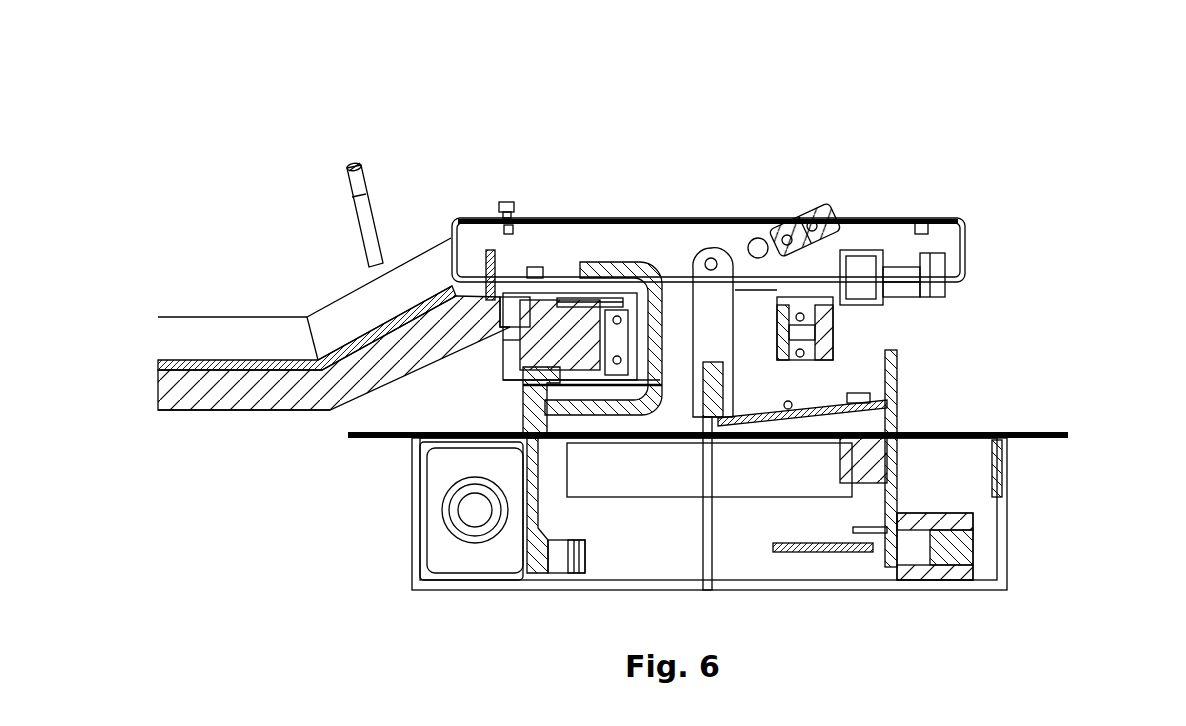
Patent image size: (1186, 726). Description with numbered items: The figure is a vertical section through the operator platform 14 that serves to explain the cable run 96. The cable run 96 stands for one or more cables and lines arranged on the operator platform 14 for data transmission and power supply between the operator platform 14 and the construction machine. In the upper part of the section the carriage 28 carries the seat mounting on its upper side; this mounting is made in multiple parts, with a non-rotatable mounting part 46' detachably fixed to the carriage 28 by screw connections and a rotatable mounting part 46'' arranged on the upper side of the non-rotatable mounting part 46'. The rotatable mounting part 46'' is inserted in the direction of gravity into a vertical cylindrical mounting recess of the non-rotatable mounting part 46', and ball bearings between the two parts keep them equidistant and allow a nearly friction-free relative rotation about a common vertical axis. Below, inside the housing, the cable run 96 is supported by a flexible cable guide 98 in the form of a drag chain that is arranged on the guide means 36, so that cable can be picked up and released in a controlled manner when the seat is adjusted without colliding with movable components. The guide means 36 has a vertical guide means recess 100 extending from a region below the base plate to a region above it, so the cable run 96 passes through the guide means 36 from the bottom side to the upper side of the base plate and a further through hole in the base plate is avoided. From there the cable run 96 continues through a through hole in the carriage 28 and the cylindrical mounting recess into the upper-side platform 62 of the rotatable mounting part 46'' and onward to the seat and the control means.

The operator platform 14 is at (386, 148).
The carriage 28 is at (610, 373).
The upper-side platform 62 is at (622, 232).
The non-rotatable mounting part 46' is at (739, 360).
The rotatable mounting part 46'' is at (807, 349).
The guide means 36 is at (510, 402).
The guide means recess 100 is at (513, 420).
The cable run 96 is at (516, 471).
The flexible cable guide 98 is at (547, 567).